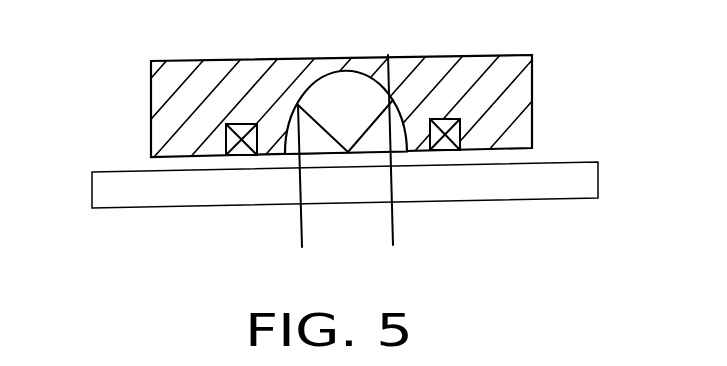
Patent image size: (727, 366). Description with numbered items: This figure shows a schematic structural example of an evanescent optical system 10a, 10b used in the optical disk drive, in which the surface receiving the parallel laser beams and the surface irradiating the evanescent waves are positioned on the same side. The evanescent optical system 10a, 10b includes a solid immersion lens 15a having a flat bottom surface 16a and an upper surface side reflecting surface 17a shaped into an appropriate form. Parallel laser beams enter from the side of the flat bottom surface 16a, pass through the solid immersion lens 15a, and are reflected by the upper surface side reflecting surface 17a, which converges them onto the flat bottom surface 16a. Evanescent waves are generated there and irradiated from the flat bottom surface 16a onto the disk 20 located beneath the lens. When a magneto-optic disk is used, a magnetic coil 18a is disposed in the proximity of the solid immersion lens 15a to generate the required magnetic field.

The evanescent optical system 10a is at (305, 112).
The evanescent optical system 10b is at (167, 102).
The solid immersion lens 15a is at (375, 132).
The flat bottom surface 16a is at (323, 157).
The upper surface side reflecting surface 17a is at (331, 70).
The magnetic coil 18a is at (463, 138).
The disk 20 is at (582, 180).